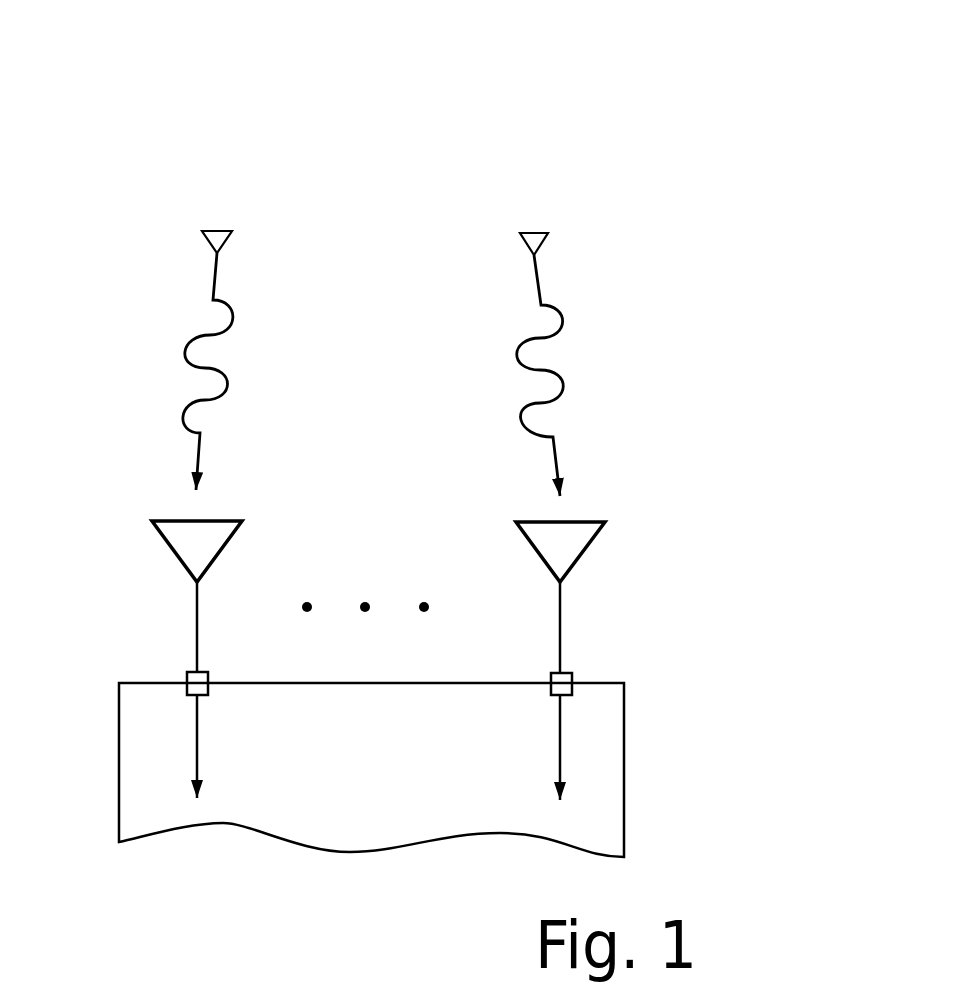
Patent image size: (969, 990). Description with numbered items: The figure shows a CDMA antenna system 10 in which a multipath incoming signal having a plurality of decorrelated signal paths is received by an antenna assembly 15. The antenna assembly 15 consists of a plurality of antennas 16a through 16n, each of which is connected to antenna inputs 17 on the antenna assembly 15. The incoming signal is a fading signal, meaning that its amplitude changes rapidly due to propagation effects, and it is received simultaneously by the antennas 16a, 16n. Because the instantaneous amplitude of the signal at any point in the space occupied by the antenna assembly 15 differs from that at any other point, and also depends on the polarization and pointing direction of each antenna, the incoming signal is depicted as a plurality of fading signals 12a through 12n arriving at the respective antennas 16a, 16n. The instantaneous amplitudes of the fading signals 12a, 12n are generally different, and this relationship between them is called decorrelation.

The antenna array system 10 is at (398, 153).
The fading signal 12a is at (178, 296).
The fading signal 12n is at (584, 278).
The antenna assembly 15 is at (670, 704).
The antenna 16a is at (163, 538).
The antenna 16n is at (575, 568).
The antenna inputs 17 is at (187, 678).